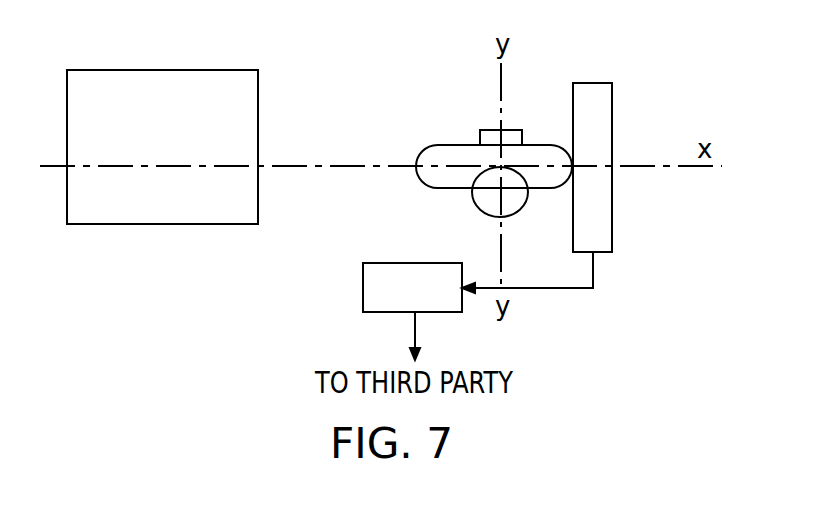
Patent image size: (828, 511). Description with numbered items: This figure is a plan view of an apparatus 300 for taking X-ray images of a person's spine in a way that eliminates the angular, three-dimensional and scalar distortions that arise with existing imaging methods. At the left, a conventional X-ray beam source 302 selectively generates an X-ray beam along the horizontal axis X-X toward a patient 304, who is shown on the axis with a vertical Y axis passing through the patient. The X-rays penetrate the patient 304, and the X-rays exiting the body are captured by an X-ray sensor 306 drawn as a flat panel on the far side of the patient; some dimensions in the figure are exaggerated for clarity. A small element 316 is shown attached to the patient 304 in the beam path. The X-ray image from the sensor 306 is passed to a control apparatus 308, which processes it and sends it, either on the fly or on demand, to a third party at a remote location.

The apparatus 300 is at (385, 80).
The X-ray beam source 302 is at (174, 224).
The patient 304 is at (443, 145).
The X-ray sensor 306 is at (613, 132).
The control apparatus 308 is at (363, 275).
The marker element 316 is at (513, 130).